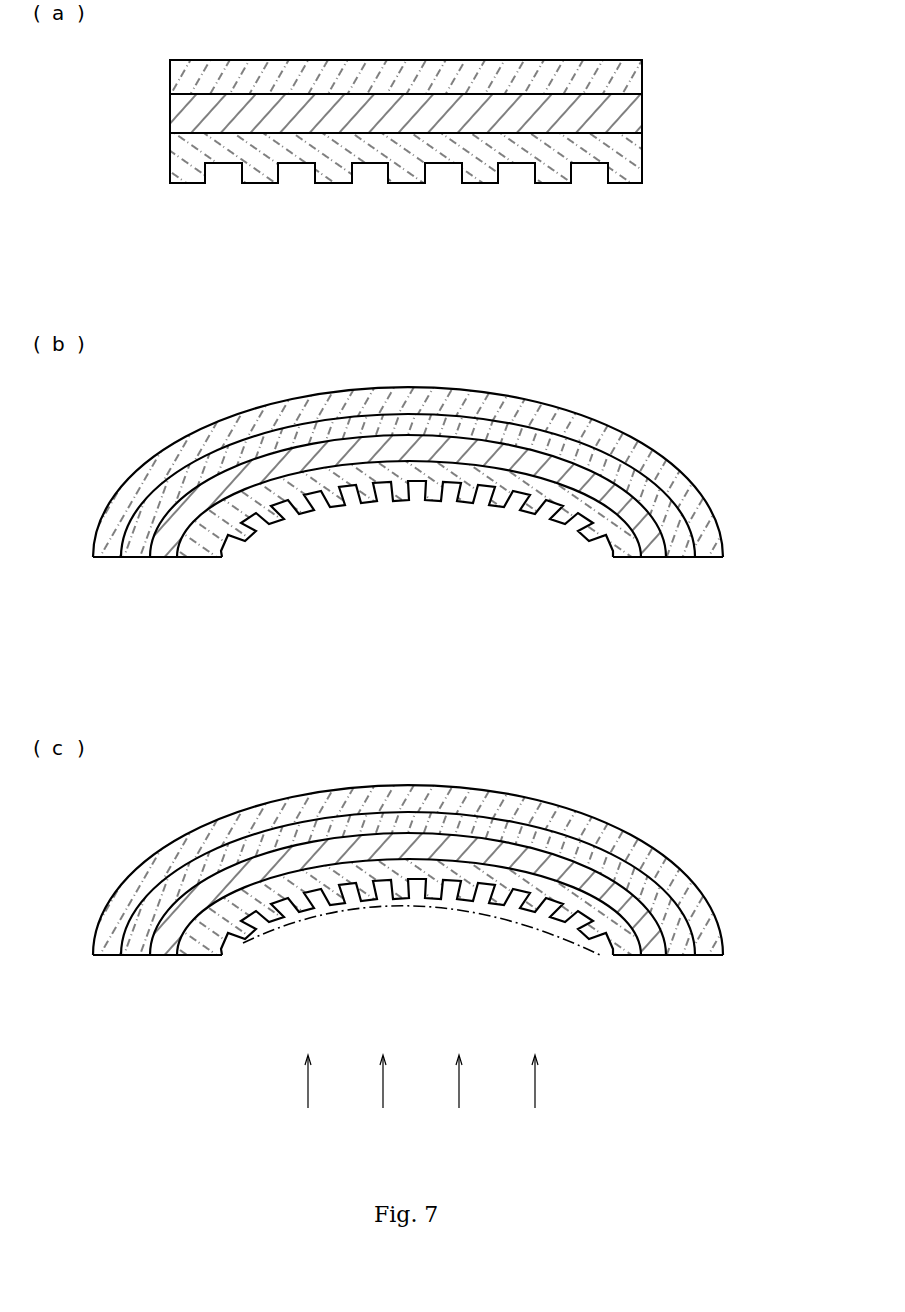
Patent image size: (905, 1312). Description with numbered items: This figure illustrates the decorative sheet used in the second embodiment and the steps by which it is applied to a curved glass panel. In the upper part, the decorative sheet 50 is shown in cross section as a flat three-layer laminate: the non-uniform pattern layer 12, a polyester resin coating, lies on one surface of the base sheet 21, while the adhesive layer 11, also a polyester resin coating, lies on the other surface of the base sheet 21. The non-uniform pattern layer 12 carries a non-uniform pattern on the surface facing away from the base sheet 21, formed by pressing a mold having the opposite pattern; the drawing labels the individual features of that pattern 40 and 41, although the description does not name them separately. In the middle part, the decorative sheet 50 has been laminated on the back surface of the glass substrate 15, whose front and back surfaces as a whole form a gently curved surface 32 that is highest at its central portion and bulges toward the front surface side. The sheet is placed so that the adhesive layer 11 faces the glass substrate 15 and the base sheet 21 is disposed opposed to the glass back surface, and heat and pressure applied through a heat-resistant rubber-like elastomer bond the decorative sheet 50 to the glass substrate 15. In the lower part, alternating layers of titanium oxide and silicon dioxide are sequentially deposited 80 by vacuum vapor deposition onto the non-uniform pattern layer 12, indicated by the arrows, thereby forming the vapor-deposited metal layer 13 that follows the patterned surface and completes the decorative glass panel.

The adhesive layer 11 is at (646, 93).
The base sheet 21 is at (646, 127).
The non-uniform pattern layer 12 is at (646, 158).
The decorative sheet 50 is at (266, 207).
The protrusion 41 is at (325, 186).
The recess 40 is at (441, 166).
The gently curved surface 32 is at (400, 422).
The glass substrate 15 is at (617, 414).
The vapor-deposited metal layer 13 is at (556, 942).
The deposition 80 is at (308, 1090).